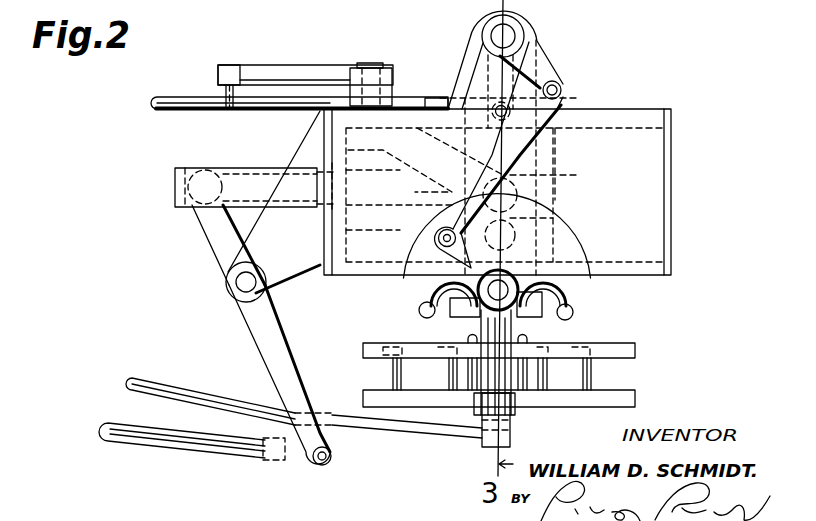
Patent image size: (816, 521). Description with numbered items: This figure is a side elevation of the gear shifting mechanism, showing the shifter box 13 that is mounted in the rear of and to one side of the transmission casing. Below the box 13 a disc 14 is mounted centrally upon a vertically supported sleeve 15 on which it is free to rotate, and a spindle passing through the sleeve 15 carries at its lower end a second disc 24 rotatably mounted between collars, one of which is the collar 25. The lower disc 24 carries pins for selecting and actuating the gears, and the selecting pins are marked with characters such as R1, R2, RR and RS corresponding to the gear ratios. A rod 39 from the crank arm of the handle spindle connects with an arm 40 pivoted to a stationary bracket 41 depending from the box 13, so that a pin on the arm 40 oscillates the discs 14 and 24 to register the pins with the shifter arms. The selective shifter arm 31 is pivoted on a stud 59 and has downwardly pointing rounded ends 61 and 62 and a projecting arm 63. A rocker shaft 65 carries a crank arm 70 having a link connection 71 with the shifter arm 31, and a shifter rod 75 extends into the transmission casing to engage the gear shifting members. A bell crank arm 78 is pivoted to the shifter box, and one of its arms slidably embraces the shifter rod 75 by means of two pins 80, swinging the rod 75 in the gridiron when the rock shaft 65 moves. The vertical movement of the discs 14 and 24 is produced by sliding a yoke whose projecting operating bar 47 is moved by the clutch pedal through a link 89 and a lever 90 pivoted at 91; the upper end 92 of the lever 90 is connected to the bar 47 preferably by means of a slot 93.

The shifter box 13 is at (638, 186).
The disc 14 is at (627, 352).
The sleeve 15 is at (515, 330).
The disc 24 is at (627, 398).
The collar 25 is at (388, 374).
The shifter arm 31 is at (535, 272).
The rod 39 is at (203, 398).
The arm 40 is at (490, 438).
The stationary bracket 41 is at (494, 380).
The operating bar 47 is at (245, 177).
The stud 59 is at (504, 263).
The end 61 is at (419, 312).
The end 62 is at (574, 312).
The projecting arm 63 is at (425, 272).
The rocker shaft 65 is at (514, 35).
The crank arm 70 is at (538, 63).
The link connection 71 is at (540, 151).
The shifter rod 75 is at (172, 103).
The bell crank arm 78 is at (268, 73).
The pin 80 is at (228, 112).
The link 89 is at (180, 447).
The lever 90 is at (266, 333).
The pivot 91 is at (240, 283).
The upper end 92 is at (221, 231).
The slot 93 is at (188, 168).
The post R1 is at (584, 388).
The post R2 is at (470, 382).
The post RR is at (536, 390).
The post RS is at (446, 375).